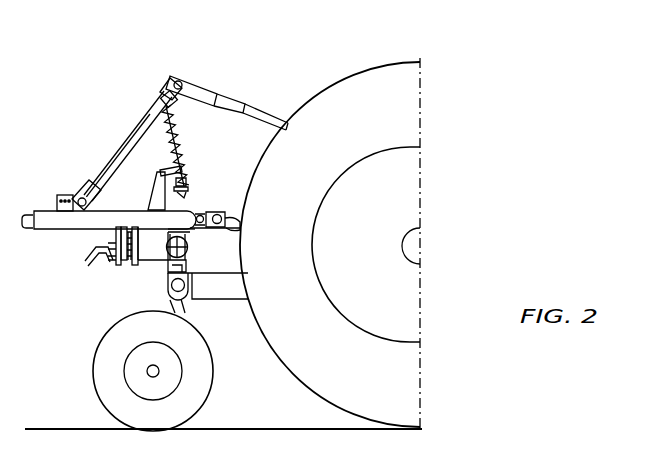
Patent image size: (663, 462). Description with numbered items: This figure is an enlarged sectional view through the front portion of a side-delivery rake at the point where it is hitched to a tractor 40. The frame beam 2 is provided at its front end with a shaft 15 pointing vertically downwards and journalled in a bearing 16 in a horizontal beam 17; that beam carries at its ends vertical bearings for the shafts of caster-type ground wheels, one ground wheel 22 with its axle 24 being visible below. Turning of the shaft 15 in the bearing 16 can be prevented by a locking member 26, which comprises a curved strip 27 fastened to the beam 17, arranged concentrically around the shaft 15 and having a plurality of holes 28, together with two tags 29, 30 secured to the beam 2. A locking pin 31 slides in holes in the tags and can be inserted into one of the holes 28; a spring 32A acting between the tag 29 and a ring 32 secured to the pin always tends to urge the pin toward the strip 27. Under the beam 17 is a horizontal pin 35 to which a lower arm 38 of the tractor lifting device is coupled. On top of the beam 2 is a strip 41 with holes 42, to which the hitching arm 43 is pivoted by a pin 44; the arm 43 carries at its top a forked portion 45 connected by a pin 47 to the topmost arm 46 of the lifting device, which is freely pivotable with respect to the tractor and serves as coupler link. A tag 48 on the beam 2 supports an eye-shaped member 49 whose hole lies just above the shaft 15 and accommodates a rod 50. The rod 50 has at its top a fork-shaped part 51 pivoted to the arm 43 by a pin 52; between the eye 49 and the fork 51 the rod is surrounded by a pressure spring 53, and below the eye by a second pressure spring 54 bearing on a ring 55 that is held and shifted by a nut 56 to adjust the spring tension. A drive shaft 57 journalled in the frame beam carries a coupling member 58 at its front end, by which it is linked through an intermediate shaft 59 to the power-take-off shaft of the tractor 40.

The beam 2 is at (95, 222).
The shaft 15 is at (192, 261).
The bearing 16 is at (186, 260).
The horizontal beam 17 is at (188, 247).
The ground wheel 22 is at (198, 398).
The axle 24 is at (148, 376).
The locking member 26 is at (91, 258).
The curved strip 27 is at (166, 231).
The holes 28 is at (150, 257).
The tag 29 is at (108, 262).
The tag 30 is at (136, 265).
The locking pin 31 is at (90, 258).
The ring 32 is at (125, 262).
The spring 32A is at (117, 266).
The horizontal pin 35 is at (180, 300).
The lower arm 38 is at (218, 286).
The tractor 40 is at (448, 109).
The strip 41 is at (60, 204).
The holes 42 is at (76, 194).
The arm 43 is at (138, 142).
The pin 44 is at (92, 190).
The forked portion 45 is at (176, 81).
The topmost arm 46 is at (214, 96).
The pin 47 is at (205, 80).
The tag 48 is at (158, 195).
The eye-shaped member 49 is at (183, 159).
The rod 50 is at (161, 156).
The fork-shaped part 51 is at (162, 107).
The pin 52 is at (165, 93).
The pressure spring 53 is at (166, 137).
The pressure spring 54 is at (183, 178).
The ring 55 is at (189, 188).
The nut 56 is at (184, 195).
The shaft 57 is at (31, 229).
The coupling member 58 is at (226, 215).
The intermediate shaft 59 is at (240, 226).